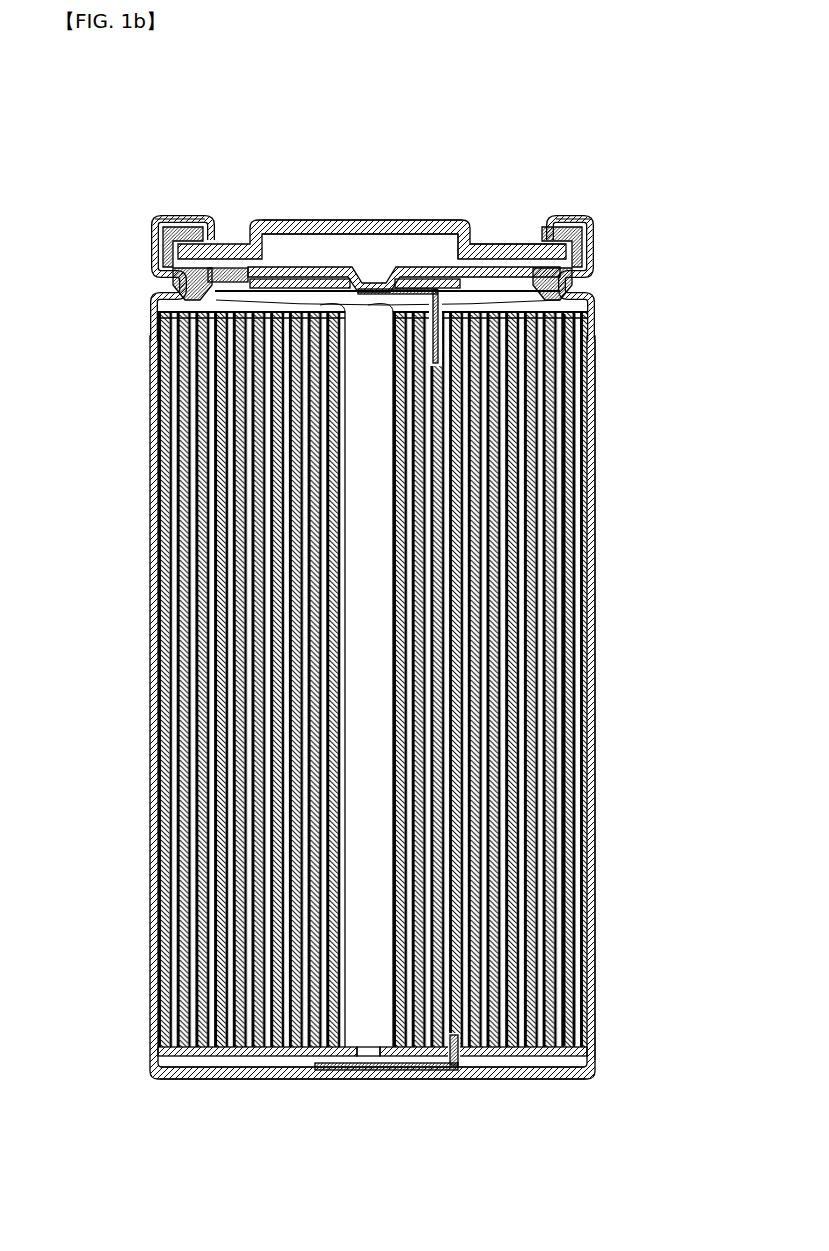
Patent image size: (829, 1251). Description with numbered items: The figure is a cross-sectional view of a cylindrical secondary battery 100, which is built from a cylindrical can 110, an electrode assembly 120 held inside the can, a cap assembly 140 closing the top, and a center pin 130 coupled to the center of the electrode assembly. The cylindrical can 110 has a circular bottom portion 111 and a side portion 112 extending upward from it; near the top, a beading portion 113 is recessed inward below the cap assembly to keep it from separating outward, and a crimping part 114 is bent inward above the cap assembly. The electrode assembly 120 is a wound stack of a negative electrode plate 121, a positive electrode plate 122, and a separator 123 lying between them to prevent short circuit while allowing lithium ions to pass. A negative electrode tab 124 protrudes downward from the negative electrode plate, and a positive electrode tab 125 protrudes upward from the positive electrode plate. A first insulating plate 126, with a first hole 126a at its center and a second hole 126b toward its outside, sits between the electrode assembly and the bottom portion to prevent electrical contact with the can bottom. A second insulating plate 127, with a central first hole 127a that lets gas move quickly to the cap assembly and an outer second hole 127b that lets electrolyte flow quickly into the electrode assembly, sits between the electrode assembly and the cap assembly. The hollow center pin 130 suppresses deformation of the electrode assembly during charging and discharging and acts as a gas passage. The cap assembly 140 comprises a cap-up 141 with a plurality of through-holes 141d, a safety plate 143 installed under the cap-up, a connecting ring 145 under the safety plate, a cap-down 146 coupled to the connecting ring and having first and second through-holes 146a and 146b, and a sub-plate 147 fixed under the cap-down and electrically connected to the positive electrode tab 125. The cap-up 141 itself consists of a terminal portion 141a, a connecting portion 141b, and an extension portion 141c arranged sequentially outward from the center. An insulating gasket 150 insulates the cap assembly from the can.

The secondary battery 100 is at (648, 168).
The cylindrical can 110 is at (603, 975).
The bottom portion 111 is at (553, 1080).
The side portion 112 is at (596, 898).
The beading portion 113 is at (581, 290).
The crimping part 114 is at (592, 226).
The electrode assembly 120 is at (690, 582).
The negative electrode plate 121 is at (587, 588).
The positive electrode plate 122 is at (583, 697).
The separator 123 is at (583, 640).
The negative electrode tab 124 is at (410, 1080).
The positive electrode tab 125 is at (441, 358).
The first insulating plate 126 is at (590, 1052).
The first hole 126a is at (366, 1058).
The second hole 126b is at (460, 1063).
The second insulating plate 127 is at (152, 314).
The first hole 127a is at (368, 305).
The second hole 127b is at (320, 305).
The center pin 130 is at (393, 760).
The cap assembly 140 is at (228, 206).
The cap-up 141 is at (432, 153).
The terminal portion 141a is at (443, 221).
The connecting portion 141b is at (497, 238).
The extension portion 141c is at (558, 245).
The through-hole 141d is at (345, 230).
The safety plate 143 is at (300, 267).
The connecting ring 145 is at (200, 213).
The cap-down 146 is at (578, 320).
The first through-hole 146a is at (380, 283).
The second through-hole 146b is at (262, 250).
The sub-plate 147 is at (216, 299).
The insulating gasket 150 is at (577, 248).